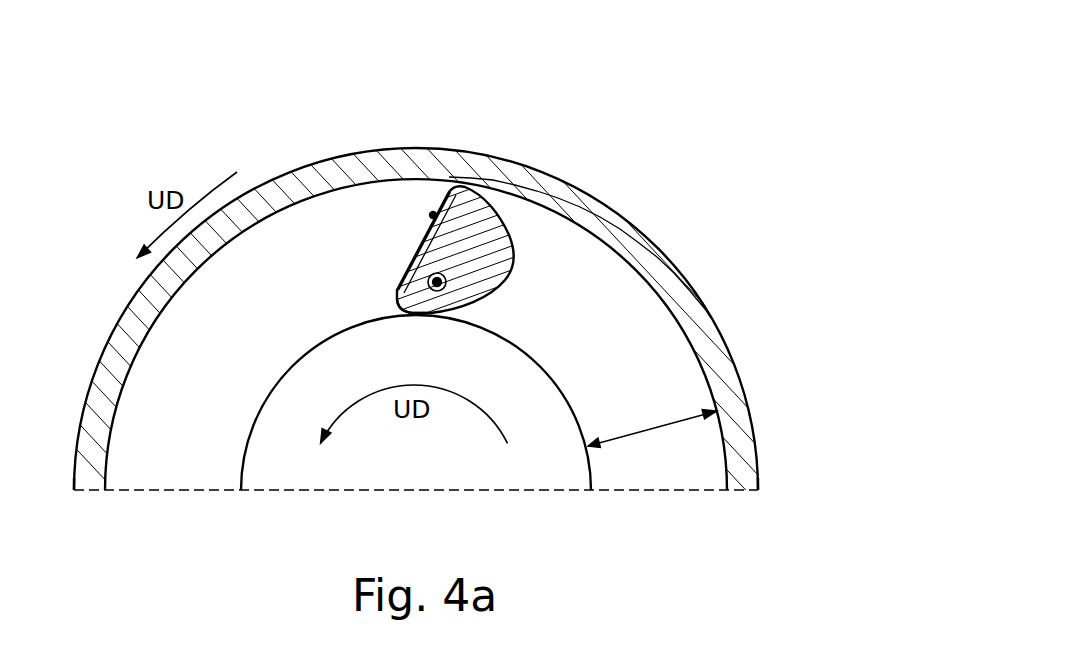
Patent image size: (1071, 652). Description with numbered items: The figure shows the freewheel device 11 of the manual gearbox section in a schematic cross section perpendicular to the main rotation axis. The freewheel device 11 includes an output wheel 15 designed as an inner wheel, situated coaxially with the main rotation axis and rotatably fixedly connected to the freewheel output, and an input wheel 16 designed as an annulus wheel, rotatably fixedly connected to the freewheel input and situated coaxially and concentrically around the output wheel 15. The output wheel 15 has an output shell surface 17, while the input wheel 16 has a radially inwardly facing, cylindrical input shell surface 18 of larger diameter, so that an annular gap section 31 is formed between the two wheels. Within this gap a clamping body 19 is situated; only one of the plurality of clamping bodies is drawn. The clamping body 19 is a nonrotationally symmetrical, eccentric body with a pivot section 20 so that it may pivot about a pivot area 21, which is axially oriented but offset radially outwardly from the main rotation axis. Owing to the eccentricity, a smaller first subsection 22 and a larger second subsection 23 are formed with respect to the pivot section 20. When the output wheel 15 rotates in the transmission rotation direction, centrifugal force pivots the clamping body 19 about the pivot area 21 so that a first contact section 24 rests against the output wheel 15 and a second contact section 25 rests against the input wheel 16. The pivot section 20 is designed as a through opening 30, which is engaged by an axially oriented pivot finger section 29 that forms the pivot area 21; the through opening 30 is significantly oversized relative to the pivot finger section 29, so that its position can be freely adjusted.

The freewheel device 11 is at (643, 59).
The output wheel 15 is at (594, 487).
The input wheel 16 is at (315, 175).
The output shell surface 17 is at (553, 371).
The input shell surface 18 is at (632, 266).
The clamping body 19 is at (470, 182).
The pivot section 20 is at (428, 273).
The pivot area 21 is at (428, 280).
The first subsection 22 is at (412, 318).
The second subsection 23 is at (588, 200).
The first contact section 24 is at (424, 320).
The second contact section 25 is at (463, 185).
The pivot finger section 29 is at (437, 282).
The through opening 30 is at (433, 215).
The annular gap section 31 is at (652, 436).